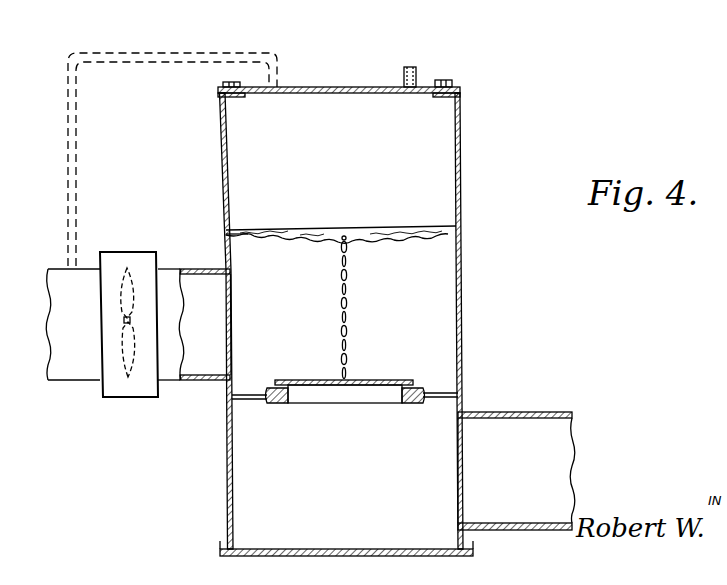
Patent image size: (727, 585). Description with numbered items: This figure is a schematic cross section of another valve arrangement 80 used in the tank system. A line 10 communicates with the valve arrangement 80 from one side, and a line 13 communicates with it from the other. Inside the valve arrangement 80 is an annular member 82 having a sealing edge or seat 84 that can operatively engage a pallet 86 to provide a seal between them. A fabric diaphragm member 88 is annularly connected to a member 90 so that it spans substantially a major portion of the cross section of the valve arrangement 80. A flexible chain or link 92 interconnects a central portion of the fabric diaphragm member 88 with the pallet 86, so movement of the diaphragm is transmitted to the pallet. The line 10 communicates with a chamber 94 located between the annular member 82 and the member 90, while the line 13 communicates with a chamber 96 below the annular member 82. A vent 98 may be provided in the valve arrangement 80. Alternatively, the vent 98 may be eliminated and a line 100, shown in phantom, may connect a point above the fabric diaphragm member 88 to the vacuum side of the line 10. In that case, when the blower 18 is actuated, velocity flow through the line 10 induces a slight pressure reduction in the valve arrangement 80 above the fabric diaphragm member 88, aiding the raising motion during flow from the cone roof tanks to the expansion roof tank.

The line 10 is at (72, 380).
The line 13 is at (545, 412).
The blower 18 is at (125, 397).
The valve arrangement 80 is at (364, 88).
The annular member 82 is at (247, 400).
The sealing edge or seat 84 is at (289, 389).
The pallet 86 is at (385, 380).
The fabric diaphragm member 88 is at (325, 230).
The member 90 is at (238, 237).
The flexible chain or link 92 is at (348, 281).
The chamber 94 is at (266, 331).
The chamber 96 is at (396, 480).
The vent 98 is at (411, 67).
The line 100 is at (88, 52).